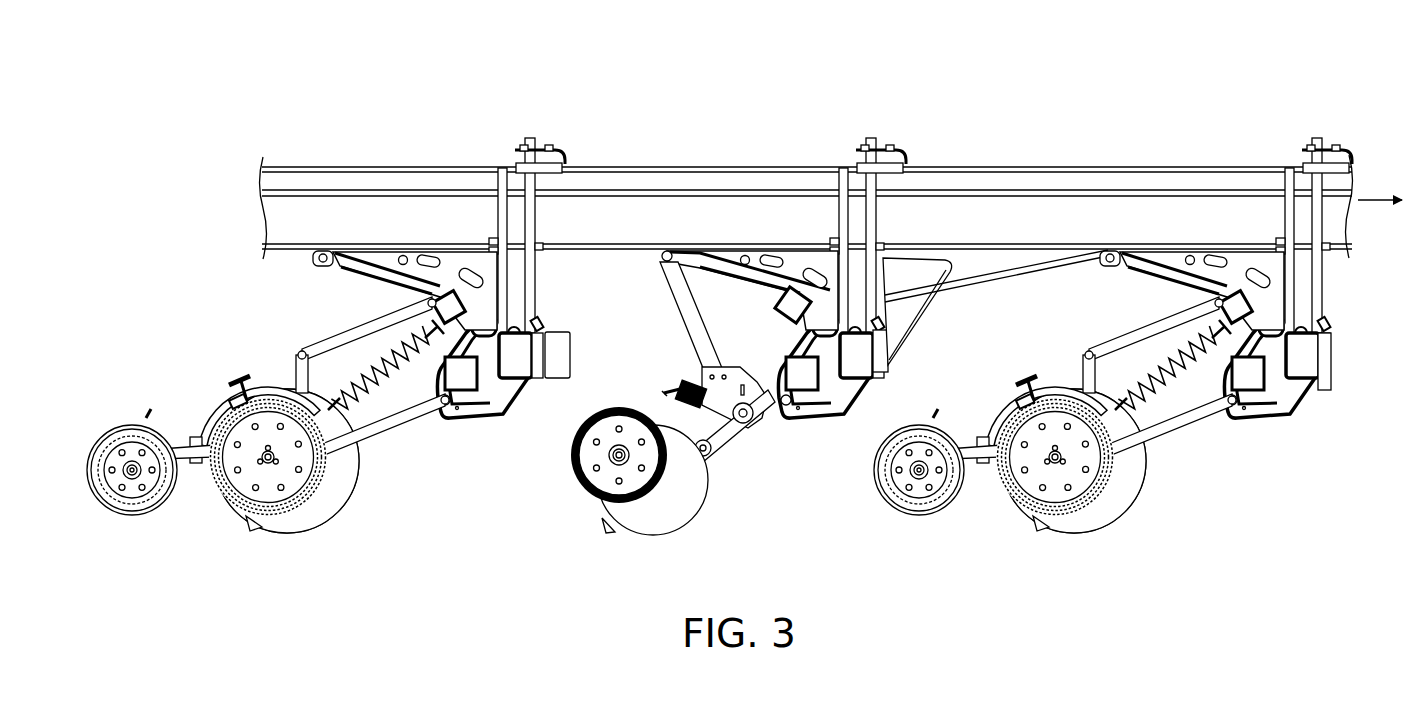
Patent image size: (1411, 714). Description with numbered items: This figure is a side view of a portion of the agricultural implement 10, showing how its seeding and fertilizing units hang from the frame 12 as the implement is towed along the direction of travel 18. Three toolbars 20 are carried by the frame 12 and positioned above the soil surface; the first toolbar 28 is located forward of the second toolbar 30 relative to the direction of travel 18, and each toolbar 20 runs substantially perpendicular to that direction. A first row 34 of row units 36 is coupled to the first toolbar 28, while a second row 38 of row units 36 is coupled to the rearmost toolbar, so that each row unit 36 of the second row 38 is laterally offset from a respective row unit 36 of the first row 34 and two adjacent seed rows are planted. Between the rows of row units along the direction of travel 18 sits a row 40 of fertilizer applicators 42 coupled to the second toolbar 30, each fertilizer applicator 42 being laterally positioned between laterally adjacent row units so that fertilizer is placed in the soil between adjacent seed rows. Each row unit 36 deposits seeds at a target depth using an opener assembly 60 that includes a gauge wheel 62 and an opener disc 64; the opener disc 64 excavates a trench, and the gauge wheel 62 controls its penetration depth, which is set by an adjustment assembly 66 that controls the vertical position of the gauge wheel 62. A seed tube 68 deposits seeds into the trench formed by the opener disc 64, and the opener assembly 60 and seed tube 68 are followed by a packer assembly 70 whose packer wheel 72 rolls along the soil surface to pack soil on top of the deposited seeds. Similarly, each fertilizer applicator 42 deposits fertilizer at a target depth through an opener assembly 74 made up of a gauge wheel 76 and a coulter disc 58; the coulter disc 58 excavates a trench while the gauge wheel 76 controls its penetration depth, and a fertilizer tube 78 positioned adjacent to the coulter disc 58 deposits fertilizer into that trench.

The agricultural implement 10 is at (749, 326).
The frame 12 is at (1000, 148).
The direction of travel 18 is at (1381, 197).
The toolbar 20 is at (545, 356).
The first toolbar 28 is at (1302, 408).
The second toolbar 30 is at (880, 372).
The first row 34 is at (1153, 529).
The row unit 36 is at (393, 441).
The second row 38 is at (318, 540).
The row of fertilizer applicators 40 is at (758, 455).
The fertilizer applicator 42 is at (786, 430).
The coulter disc 58 is at (654, 517).
The opener assembly 60 is at (296, 567).
The gauge wheel 62 is at (215, 430).
The opener disc 64 is at (343, 511).
The adjustment assembly 66 is at (236, 372).
The seed tube 68 is at (257, 537).
The packer assembly 70 is at (130, 533).
The packer wheel 72 is at (134, 418).
The opener assembly 74 is at (570, 489).
The gauge wheel 76 is at (605, 405).
The fertilizer tube 78 is at (617, 543).